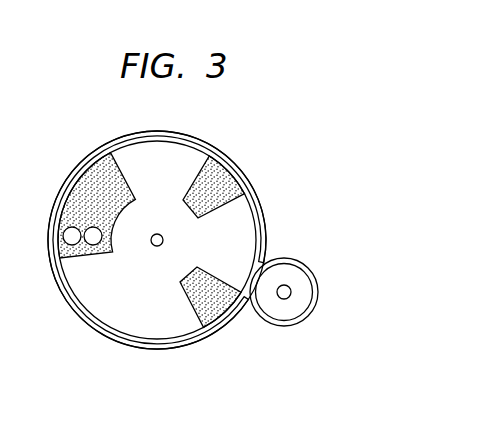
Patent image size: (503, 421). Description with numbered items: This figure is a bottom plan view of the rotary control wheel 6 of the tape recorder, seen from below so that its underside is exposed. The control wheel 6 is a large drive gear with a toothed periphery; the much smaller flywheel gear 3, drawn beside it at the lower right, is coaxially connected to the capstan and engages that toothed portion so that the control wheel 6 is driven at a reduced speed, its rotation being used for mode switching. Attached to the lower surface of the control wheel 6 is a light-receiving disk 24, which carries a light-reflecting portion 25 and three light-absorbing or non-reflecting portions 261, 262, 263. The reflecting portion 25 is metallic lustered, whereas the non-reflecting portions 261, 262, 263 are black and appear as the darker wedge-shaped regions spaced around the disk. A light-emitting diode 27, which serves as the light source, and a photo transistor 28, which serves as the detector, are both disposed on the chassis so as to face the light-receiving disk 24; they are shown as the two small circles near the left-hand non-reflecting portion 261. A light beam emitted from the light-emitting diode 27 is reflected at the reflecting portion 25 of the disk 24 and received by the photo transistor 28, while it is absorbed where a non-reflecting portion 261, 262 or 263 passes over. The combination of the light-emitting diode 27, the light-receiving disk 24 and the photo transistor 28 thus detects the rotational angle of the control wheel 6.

The flywheel gear 3 is at (307, 323).
The rotary control wheel 6 is at (100, 134).
The light-receiving disk 24 is at (118, 338).
The light-reflecting portion 25 is at (93, 305).
The light-absorbing portion 261 is at (88, 190).
The light-absorbing portion 262 is at (237, 168).
The light-absorbing portion 263 is at (228, 316).
The light-emitting diode 27 is at (67, 231).
The photo transistor 28 is at (93, 246).